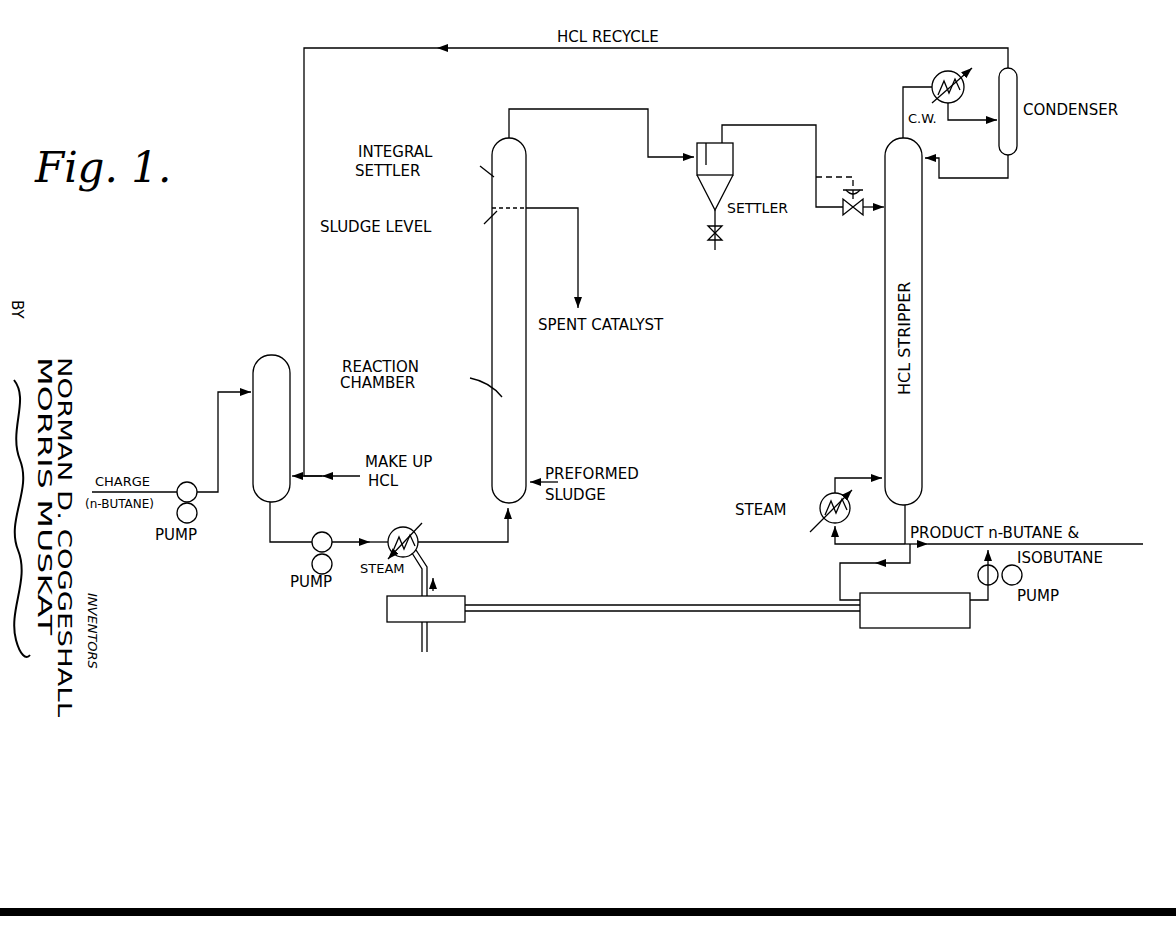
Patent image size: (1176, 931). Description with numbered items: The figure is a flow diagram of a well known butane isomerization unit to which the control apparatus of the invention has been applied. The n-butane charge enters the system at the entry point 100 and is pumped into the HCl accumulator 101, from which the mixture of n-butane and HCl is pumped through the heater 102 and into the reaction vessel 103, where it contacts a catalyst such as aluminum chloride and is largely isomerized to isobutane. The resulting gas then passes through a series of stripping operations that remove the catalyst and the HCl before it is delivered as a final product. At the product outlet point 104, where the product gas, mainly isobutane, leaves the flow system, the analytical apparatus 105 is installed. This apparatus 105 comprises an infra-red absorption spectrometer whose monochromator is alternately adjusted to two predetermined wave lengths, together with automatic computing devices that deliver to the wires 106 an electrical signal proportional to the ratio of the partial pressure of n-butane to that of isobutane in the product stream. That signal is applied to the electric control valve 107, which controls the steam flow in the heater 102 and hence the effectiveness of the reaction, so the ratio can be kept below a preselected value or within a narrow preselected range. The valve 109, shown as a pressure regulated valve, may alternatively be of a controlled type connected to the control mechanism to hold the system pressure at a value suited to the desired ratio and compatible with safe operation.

The n-butane entry point 100 is at (180, 484).
The HCl accumulator 101 is at (266, 357).
The heater 102 is at (410, 533).
The reaction vessel 103 is at (528, 376).
The product outlet point 104 is at (905, 548).
The analytical apparatus 105 is at (970, 628).
The wires 106 is at (648, 613).
The electric control valve 107 is at (463, 597).
The valve 109 is at (853, 215).